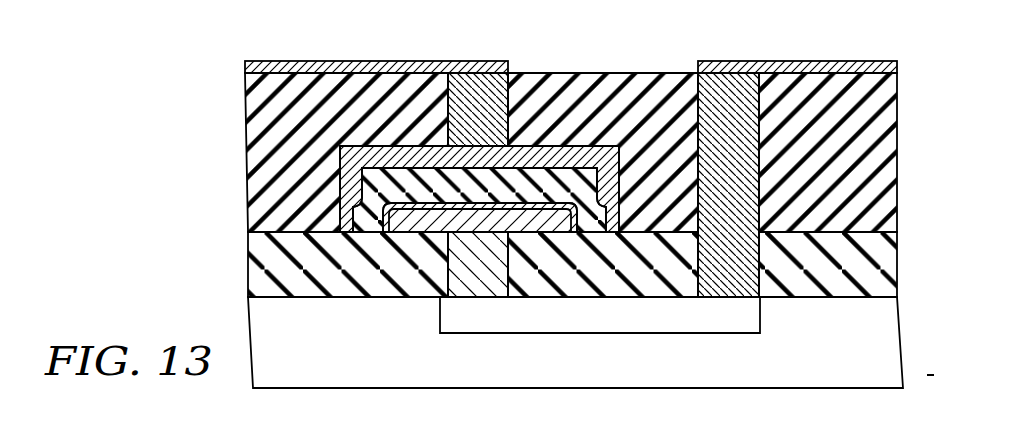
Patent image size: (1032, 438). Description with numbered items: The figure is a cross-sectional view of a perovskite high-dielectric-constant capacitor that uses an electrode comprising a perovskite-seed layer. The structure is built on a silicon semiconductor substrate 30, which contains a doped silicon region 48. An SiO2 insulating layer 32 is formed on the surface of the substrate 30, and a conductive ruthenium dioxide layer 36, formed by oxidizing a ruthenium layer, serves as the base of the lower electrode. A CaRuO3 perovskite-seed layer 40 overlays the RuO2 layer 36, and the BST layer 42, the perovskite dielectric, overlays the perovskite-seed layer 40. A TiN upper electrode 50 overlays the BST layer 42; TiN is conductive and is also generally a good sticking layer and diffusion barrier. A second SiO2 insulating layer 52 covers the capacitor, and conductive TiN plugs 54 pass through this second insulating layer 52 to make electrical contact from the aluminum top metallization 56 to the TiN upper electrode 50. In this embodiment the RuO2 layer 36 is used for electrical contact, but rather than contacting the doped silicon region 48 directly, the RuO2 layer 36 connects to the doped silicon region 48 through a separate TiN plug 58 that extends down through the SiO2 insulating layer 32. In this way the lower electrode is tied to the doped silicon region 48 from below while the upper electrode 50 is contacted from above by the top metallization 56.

The silicon semiconductor substrate 30 is at (606, 377).
The SiO2 insulating layer 32 is at (255, 270).
The ruthenium dioxide layer 36 is at (427, 230).
The CaRuO3 perovskite-seed layer 40 is at (383, 234).
The BST layer 42 is at (492, 196).
The doped silicon region 48 is at (765, 313).
The TiN upper electrode 50 is at (343, 204).
The second SiO2 insulating layer 52 is at (300, 159).
The TiN plug 54 is at (511, 74).
The aluminum top metallization 56 is at (313, 70).
The TiN plug 58 is at (493, 279).